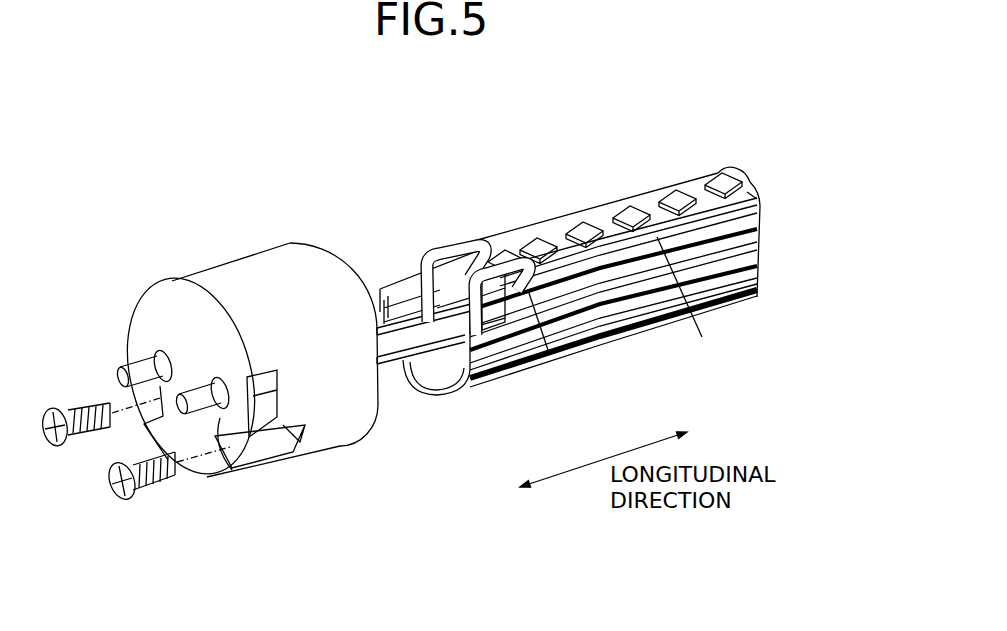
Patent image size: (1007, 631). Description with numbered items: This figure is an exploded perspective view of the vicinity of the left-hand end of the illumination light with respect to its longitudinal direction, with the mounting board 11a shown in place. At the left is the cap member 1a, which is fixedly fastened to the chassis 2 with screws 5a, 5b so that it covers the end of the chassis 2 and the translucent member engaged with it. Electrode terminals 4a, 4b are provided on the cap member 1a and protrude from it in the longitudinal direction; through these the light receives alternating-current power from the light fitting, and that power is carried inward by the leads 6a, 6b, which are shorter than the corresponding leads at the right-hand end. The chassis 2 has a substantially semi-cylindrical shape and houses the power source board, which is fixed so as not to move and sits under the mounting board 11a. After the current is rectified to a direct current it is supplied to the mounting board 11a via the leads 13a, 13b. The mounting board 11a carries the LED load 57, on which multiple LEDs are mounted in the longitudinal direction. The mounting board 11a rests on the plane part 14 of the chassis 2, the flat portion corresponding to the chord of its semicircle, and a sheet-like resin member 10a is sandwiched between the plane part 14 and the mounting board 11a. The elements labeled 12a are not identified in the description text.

The cap member 1a is at (258, 270).
The chassis 2 is at (625, 340).
The electrode terminal 4a is at (145, 363).
The electrode terminal 4b is at (212, 424).
The screw 5a is at (85, 407).
The screw 5b is at (152, 490).
The lead 6a is at (372, 318).
The lead 6b is at (392, 365).
The sheet-like resin member 10a is at (767, 207).
The mounting board 11a is at (732, 172).
The contact element 12a is at (531, 247).
The lead 13a is at (455, 245).
The lead 13b is at (549, 358).
The plane part 14 is at (657, 237).
The LED load 57 is at (541, 143).